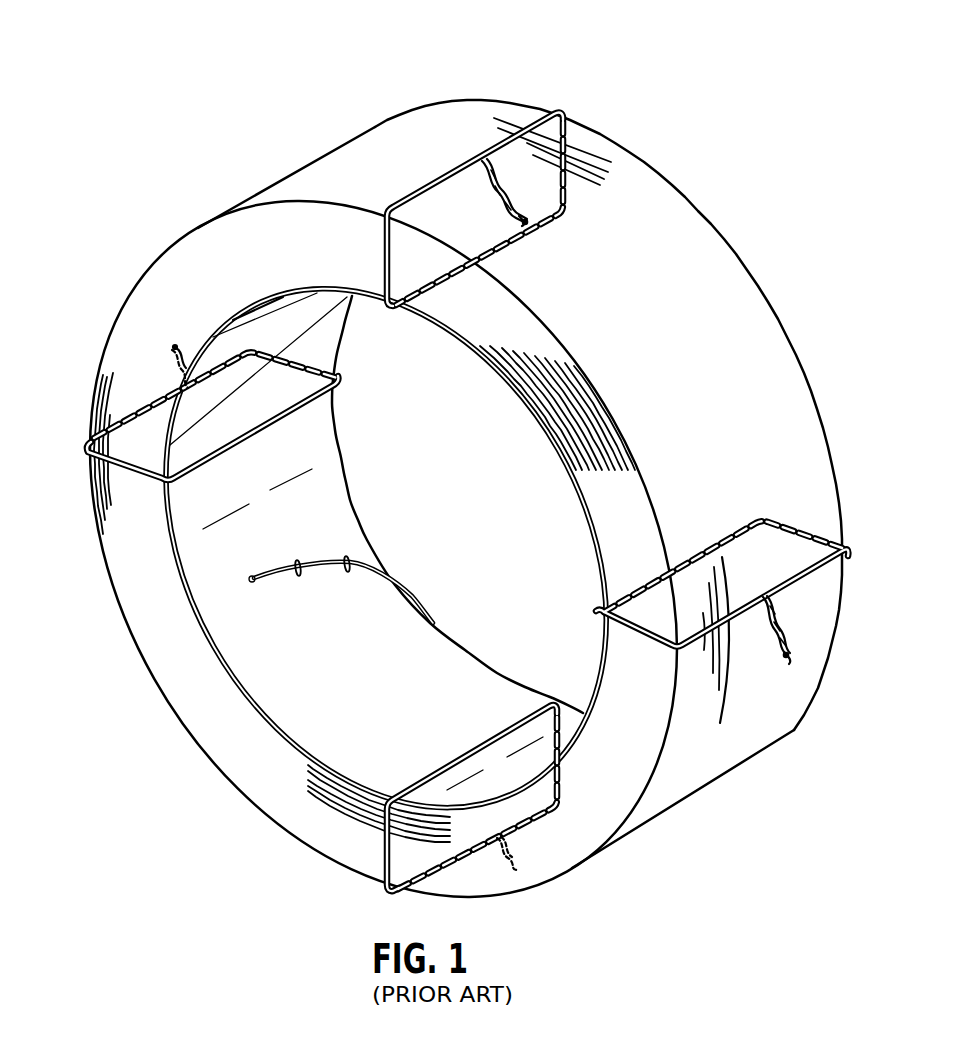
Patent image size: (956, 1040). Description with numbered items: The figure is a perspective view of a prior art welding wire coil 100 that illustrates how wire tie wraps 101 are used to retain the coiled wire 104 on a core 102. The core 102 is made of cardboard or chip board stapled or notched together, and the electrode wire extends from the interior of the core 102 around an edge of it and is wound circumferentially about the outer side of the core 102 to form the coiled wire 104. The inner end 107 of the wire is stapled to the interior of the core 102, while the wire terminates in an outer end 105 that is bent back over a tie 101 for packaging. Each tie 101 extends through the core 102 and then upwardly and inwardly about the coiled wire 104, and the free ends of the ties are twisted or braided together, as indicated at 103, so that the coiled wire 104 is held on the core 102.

The welding wire coil 100 is at (449, 74).
The wire tie wrap 101 is at (537, 112).
The core 102 is at (287, 712).
The twisted free ends of ties 103 is at (513, 192).
The coiled wire 104 is at (700, 236).
The outer end of wire 105 is at (733, 700).
The inner end of wire 107 is at (262, 582).